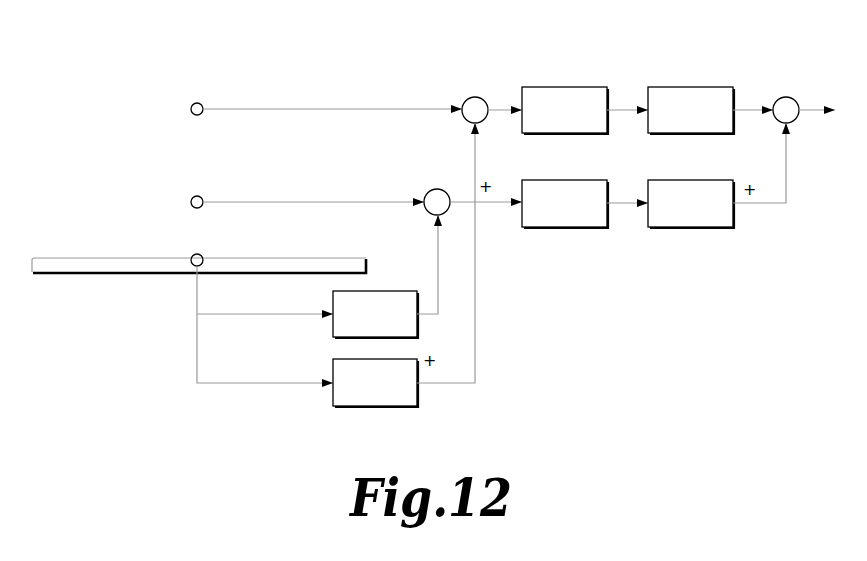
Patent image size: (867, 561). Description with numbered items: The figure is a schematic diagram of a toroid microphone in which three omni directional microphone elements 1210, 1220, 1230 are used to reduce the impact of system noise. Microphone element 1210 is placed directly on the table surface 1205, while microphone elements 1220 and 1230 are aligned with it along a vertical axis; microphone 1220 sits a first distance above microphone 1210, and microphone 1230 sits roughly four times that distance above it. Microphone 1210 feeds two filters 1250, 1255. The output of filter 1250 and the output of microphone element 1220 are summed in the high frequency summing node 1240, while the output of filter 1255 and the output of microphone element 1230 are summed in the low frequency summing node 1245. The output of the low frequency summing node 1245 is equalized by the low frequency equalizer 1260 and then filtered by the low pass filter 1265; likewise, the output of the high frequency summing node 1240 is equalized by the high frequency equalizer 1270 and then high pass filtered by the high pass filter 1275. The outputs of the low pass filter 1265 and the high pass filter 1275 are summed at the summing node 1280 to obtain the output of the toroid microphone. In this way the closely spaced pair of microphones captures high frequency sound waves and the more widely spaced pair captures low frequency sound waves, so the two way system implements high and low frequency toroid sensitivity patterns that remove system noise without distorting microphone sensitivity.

The table surface 1205 is at (68, 258).
The microphone element 1210 is at (222, 243).
The microphone element 1220 is at (202, 197).
The microphone element 1230 is at (202, 104).
The high frequency summing node 1240 is at (430, 190).
The low frequency summing node 1245 is at (469, 97).
The filter 1250 is at (334, 329).
The filter 1255 is at (334, 401).
The low frequency equalizer 1260 is at (563, 87).
The low pass filter 1265 is at (690, 87).
The high frequency equalizer 1270 is at (571, 228).
The high pass filter 1275 is at (698, 228).
The summing node 1280 is at (782, 97).